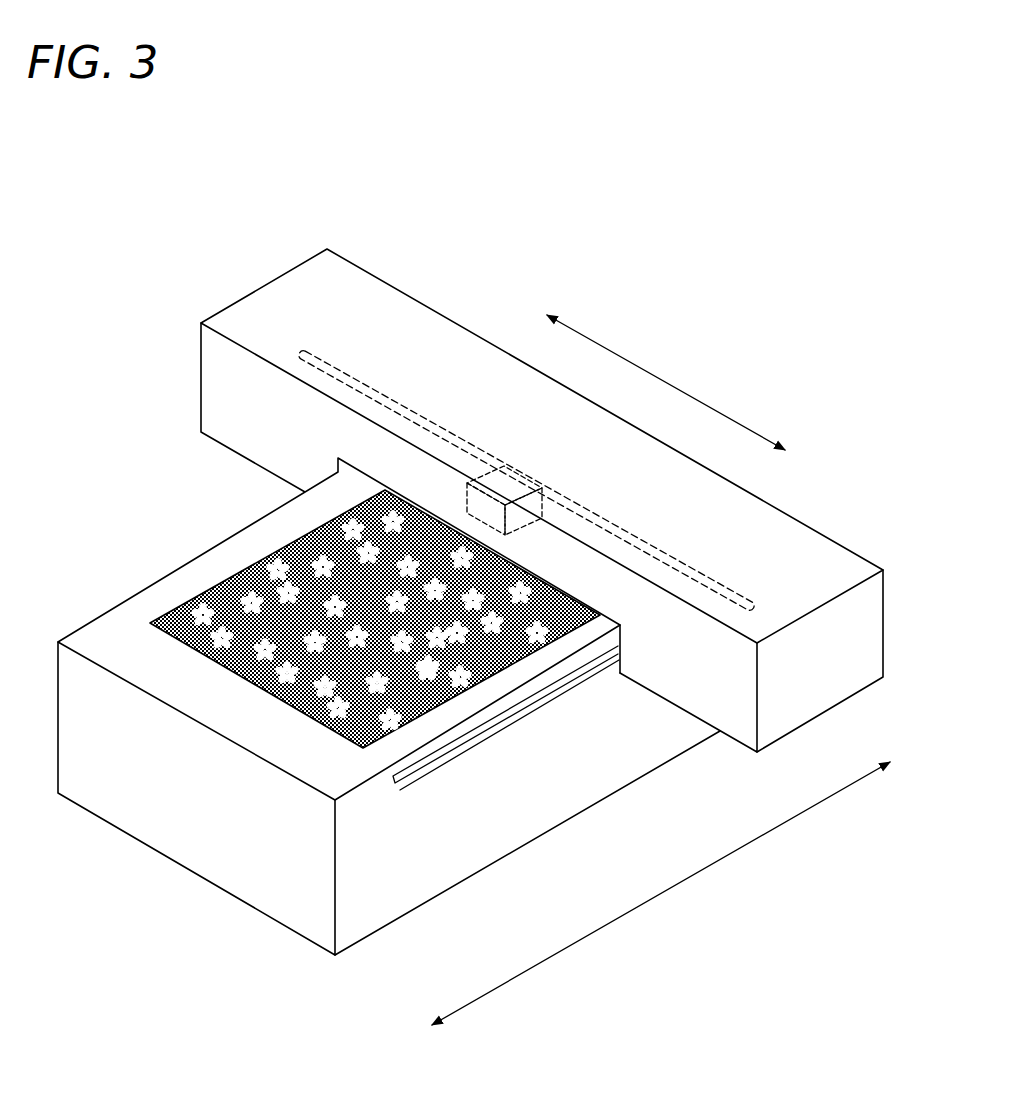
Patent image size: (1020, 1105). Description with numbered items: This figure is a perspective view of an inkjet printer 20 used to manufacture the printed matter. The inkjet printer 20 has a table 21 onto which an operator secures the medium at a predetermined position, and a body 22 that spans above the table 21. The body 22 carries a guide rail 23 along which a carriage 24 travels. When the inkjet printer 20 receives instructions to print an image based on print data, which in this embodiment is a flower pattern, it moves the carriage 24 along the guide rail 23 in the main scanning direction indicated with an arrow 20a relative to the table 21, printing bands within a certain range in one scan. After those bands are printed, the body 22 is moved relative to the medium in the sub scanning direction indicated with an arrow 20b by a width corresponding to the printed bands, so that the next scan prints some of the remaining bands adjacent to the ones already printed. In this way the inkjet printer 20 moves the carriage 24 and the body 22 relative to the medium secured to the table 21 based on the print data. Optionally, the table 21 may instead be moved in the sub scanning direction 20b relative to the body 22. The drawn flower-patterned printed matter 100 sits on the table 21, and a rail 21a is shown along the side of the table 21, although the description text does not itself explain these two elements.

The inkjet printer 20 is at (660, 226).
The arrow indicating main scanning direction 20a is at (687, 395).
The arrow indicating sub scanning direction 20b is at (660, 895).
The table 21 is at (173, 835).
The guide rail 21a is at (523, 710).
The body 22 is at (283, 300).
The guide rail 23 is at (360, 378).
The carriage 24 is at (517, 464).
The printed medium 100 is at (238, 558).